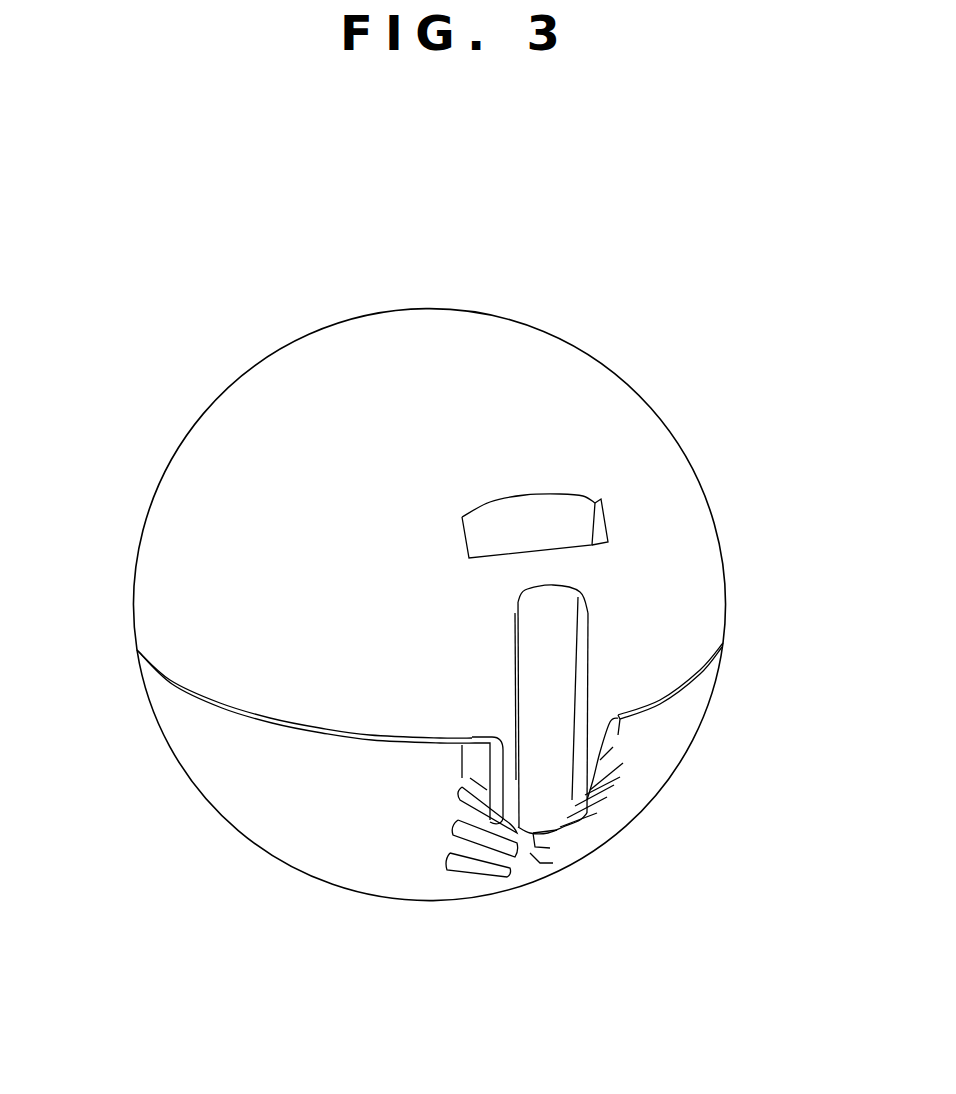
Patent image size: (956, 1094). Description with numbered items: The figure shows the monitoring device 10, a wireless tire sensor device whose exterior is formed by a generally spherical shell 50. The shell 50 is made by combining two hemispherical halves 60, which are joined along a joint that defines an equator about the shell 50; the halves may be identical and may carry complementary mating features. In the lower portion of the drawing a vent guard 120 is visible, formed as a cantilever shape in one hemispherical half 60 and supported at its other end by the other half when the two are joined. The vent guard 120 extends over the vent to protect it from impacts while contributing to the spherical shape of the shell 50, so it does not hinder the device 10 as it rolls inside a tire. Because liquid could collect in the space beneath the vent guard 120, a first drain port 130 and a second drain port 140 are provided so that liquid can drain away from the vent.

The monitoring device 10 is at (227, 252).
The shell 50 is at (580, 375).
The hemispherical half 60 is at (160, 558).
The vent guard 120 is at (548, 800).
The first drain port 130 is at (610, 745).
The second drain port 140 is at (577, 508).